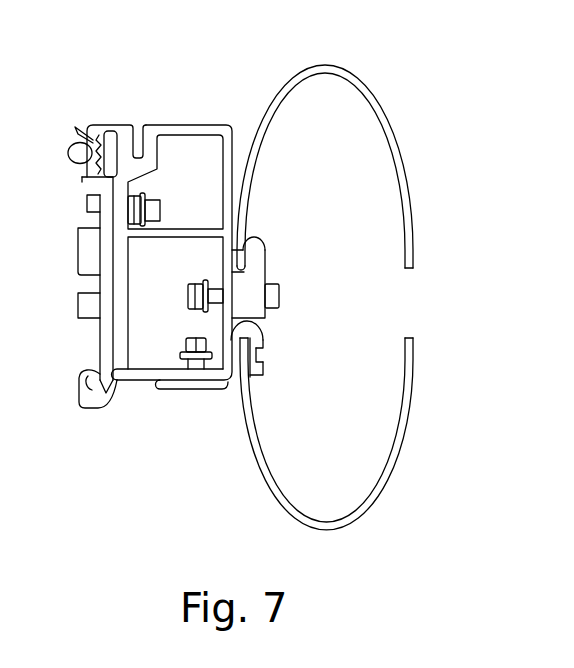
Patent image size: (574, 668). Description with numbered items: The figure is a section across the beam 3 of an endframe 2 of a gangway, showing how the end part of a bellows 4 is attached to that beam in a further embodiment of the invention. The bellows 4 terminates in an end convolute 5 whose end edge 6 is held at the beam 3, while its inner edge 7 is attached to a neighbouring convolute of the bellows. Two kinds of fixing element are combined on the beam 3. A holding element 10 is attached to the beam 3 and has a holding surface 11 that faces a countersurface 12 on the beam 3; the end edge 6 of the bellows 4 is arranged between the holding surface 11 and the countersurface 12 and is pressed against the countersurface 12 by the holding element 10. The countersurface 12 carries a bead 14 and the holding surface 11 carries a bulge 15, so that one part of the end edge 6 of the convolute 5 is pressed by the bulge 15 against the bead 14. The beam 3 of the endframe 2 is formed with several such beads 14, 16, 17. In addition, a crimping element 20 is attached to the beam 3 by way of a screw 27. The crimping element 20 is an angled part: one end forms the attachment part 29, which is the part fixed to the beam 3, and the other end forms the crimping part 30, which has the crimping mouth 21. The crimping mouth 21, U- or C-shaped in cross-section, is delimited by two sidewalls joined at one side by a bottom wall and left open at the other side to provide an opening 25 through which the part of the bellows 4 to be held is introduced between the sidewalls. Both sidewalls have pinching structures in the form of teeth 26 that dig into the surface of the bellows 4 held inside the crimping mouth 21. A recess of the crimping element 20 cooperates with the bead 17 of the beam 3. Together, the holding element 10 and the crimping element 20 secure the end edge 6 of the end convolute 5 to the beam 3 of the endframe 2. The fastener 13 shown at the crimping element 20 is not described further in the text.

The endframe 2 is at (100, 98).
The beam 3 is at (198, 130).
The bellows 4 is at (445, 112).
The end convolute 5 is at (348, 73).
The end edge 6 is at (254, 236).
The inner edge 7 is at (416, 266).
The holding element 10 is at (251, 282).
The holding surface 11 is at (244, 247).
The countersurface 12 is at (233, 237).
The fastening screw 13 is at (278, 292).
The bead 14 is at (233, 143).
The bulge 15 is at (237, 242).
The bead 16 is at (233, 237).
The bead 17 is at (233, 352).
The crimping element 20 is at (249, 322).
The crimping mouth 21 is at (255, 365).
The opening 25 is at (252, 392).
The teeth 26 is at (261, 377).
The screw 27 is at (190, 345).
The attachment part 29 is at (177, 390).
The crimping part 30 is at (259, 333).